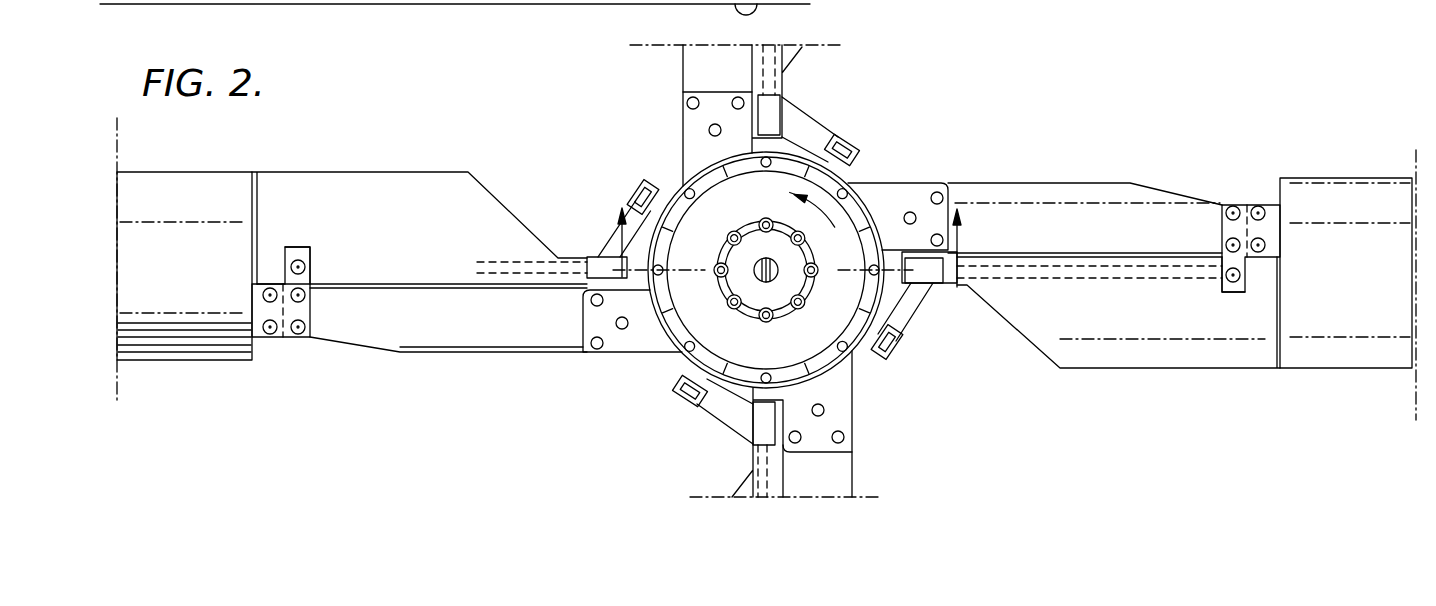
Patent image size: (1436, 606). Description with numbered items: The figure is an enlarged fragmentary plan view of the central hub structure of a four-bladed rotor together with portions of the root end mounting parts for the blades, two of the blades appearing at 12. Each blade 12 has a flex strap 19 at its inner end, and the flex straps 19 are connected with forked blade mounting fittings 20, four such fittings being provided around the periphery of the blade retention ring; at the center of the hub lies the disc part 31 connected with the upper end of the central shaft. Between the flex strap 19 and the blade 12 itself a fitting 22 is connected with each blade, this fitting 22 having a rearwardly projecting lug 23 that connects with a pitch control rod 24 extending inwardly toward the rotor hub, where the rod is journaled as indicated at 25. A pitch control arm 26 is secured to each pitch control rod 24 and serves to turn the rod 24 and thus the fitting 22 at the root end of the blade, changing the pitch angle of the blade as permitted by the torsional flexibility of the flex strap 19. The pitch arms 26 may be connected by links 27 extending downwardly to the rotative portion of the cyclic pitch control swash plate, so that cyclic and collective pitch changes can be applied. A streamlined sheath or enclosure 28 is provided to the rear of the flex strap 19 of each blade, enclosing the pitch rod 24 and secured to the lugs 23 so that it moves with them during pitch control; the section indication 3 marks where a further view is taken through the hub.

The section line of FIG. 3 is at (786, 263).
The blade 12 is at (197, 360).
The flex strap 19 is at (692, 72).
The forked blade mounting fitting 20 is at (692, 127).
The fitting 22 is at (258, 332).
The rearwardly projecting lug 23 is at (312, 263).
The pitch control rod 24 is at (512, 258).
The journal 25 is at (790, 148).
The pitch control arm 26 is at (633, 210).
The link 27 is at (900, 352).
The streamlined sheath or enclosure 28 is at (418, 183).
The disc part 31 is at (713, 173).